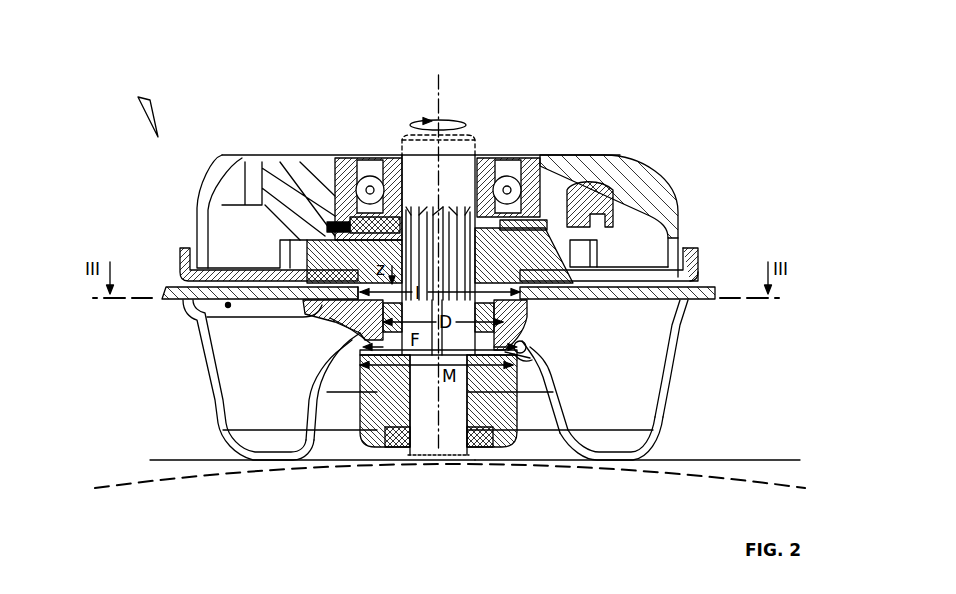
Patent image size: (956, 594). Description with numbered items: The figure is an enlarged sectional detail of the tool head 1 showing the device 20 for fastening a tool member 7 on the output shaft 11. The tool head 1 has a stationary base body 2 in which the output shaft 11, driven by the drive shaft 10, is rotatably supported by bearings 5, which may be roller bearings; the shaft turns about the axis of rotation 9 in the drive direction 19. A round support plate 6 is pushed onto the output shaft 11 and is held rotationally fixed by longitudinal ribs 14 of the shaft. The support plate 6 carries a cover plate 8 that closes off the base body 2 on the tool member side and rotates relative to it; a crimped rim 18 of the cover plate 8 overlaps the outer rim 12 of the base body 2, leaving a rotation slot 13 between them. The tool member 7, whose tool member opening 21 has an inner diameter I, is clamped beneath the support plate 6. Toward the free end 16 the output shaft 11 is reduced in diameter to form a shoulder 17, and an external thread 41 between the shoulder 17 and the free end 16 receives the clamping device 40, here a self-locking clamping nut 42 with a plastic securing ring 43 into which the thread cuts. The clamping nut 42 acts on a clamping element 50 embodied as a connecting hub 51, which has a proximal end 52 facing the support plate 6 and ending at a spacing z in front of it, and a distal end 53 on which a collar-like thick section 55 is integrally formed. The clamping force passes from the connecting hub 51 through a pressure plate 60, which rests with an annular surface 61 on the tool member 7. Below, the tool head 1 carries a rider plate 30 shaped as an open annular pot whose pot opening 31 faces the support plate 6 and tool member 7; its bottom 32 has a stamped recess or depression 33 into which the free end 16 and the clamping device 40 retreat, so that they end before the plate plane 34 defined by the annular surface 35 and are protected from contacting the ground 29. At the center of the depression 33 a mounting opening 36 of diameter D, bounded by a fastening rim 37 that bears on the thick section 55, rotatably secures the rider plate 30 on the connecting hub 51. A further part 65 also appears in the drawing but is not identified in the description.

The tool head 1 is at (186, 166).
The base body 2 is at (608, 168).
The bearings 5 is at (495, 197).
The support plate 6 is at (577, 172).
The tool member 7 is at (165, 289).
The cover plate 8 is at (617, 267).
The axis of rotation 9 is at (438, 80).
The drive shaft 10 is at (450, 267).
The output shaft 11 is at (450, 202).
The outer rim 12 is at (668, 285).
The rotation slot 13 is at (685, 250).
The longitudinal ribs 14 is at (490, 253).
The free end 16 is at (458, 458).
The shoulder 17 is at (418, 362).
The crimped rim 18 is at (700, 257).
The drive direction 19 is at (458, 122).
The device for fastening the tool member 20 is at (353, 352).
The tool member opening 21 is at (500, 313).
The ground 29 is at (690, 462).
The rider plate 30 is at (660, 413).
The pot opening 31 is at (228, 307).
The bottom 32 is at (450, 497).
The recess or depression 33 is at (562, 403).
The plate plane 34 is at (200, 462).
The annular surface 35 is at (611, 473).
The mounting opening 36 is at (308, 376).
The fastening rim 37 is at (318, 383).
The clamping device 40 is at (505, 442).
The external thread 41 is at (483, 450).
The clamping nut 42 is at (390, 405).
The securing ring 43 is at (399, 440).
The clamping element 50 is at (646, 361).
The connecting hub 51 is at (375, 296).
The proximal end 52 is at (380, 310).
The distal end 53 is at (542, 417).
The thick section 55 is at (518, 353).
The pressure plate 60 is at (244, 388).
The annular surface 61 is at (345, 322).
The contact surface 65 is at (522, 358).